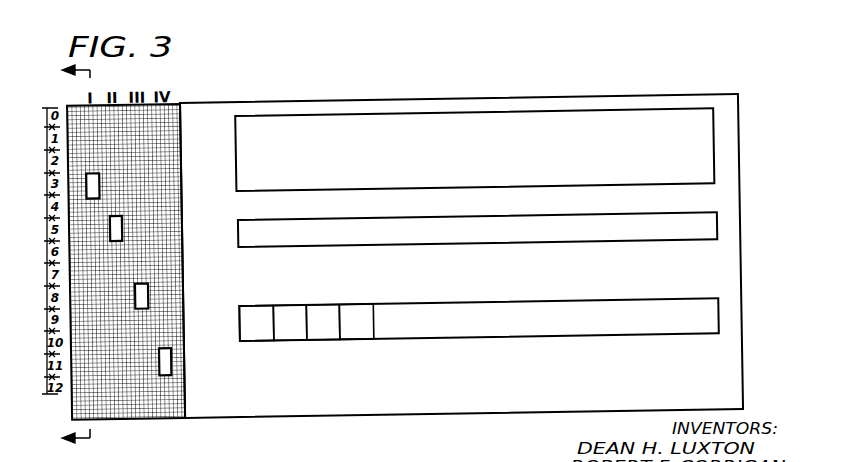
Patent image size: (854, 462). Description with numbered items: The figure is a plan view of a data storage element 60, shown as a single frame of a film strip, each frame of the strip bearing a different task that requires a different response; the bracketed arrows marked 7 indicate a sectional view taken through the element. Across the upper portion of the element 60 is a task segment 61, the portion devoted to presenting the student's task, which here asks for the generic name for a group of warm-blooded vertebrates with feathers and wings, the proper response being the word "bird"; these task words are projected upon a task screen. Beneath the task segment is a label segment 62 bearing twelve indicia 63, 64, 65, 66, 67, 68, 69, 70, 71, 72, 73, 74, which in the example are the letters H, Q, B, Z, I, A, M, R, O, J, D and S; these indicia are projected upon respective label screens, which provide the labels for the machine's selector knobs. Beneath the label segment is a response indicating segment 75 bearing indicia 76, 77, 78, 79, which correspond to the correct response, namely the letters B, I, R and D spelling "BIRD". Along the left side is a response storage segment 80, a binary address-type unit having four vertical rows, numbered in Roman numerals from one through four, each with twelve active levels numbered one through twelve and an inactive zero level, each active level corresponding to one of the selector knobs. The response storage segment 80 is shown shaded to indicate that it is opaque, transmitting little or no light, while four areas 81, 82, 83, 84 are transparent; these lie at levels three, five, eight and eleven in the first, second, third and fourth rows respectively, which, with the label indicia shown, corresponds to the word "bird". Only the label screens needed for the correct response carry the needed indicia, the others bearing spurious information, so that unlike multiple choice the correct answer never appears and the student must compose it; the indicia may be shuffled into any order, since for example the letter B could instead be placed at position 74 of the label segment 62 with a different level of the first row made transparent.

The section line 7- 7 is at (65, 257).
The data storage element 60 is at (330, 100).
The task segment 61 is at (715, 110).
The label segment 62 is at (716, 223).
The indicium 63 is at (258, 224).
The indicium 64 is at (301, 224).
The indicium 65 is at (338, 224).
The indicium 66 is at (374, 224).
The indicium 67 is at (411, 224).
The indicium 68 is at (448, 224).
The indicium 69 is at (491, 224).
The indicium 70 is at (529, 224).
The indicium 71 is at (568, 224).
The indicium 72 is at (604, 224).
The indicium 73 is at (648, 224).
The indicium 74 is at (689, 224).
The response indicating segment 75 is at (716, 312).
The response indicium 76 is at (251, 309).
The response indicium 77 is at (289, 309).
The response indicium 78 is at (329, 309).
The response indicium 79 is at (366, 309).
The response storage segment 80 is at (181, 136).
The transparent area 81 is at (91, 185).
The transparent area 82 is at (115, 229).
The transparent area 83 is at (140, 294).
The transparent area 84 is at (163, 363).